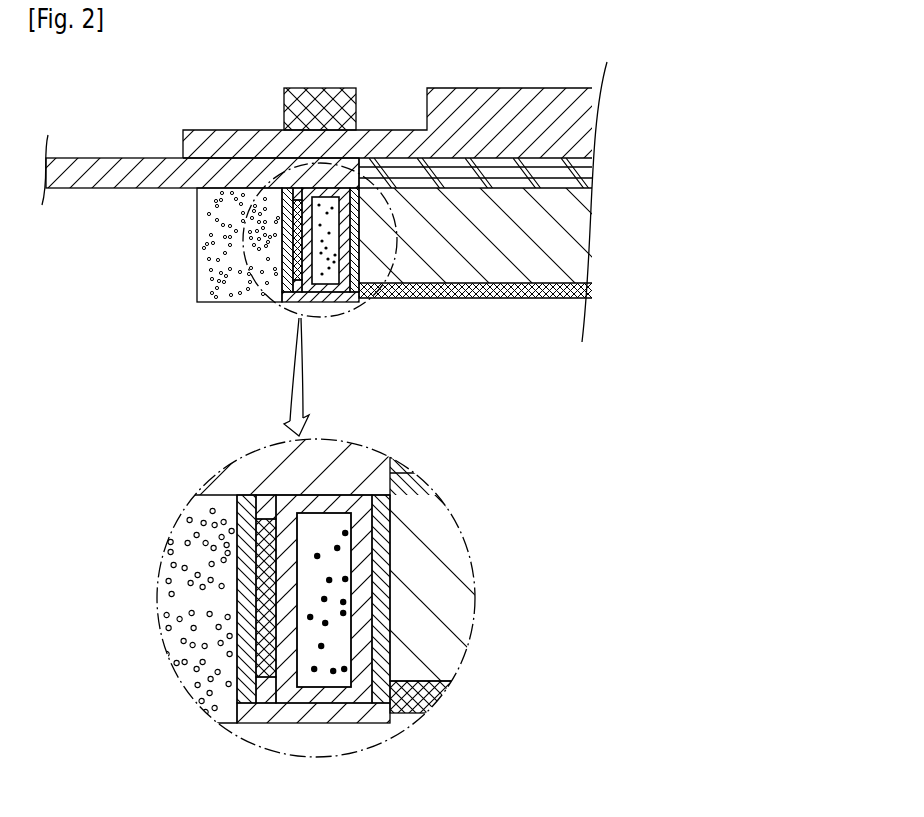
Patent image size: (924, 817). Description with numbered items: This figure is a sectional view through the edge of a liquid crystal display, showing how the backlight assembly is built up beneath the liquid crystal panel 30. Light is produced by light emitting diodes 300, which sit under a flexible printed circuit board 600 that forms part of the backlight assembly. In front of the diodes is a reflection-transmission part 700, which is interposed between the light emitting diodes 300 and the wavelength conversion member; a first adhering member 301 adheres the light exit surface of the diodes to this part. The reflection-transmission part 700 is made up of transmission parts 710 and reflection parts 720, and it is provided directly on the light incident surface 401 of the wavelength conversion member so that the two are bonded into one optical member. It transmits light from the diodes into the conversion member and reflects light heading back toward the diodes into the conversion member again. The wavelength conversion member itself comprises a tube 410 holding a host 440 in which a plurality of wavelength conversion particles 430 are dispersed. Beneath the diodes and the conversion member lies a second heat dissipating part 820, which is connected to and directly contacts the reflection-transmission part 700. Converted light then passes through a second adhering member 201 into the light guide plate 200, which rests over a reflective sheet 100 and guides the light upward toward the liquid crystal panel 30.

The liquid crystal panel 30 is at (501, 98).
The flexible printed circuit board 600 is at (121, 163).
The light emitting diodes 300 is at (198, 213).
The first adhering member 301 is at (246, 567).
The light incident surface 401 is at (280, 596).
The tube 410 is at (355, 697).
The wavelength conversion particles 430 is at (312, 240).
The host 440 is at (288, 688).
The reflection-transmission part 700 is at (114, 465).
The transmission parts 710 is at (240, 546).
The reflection parts 720 is at (250, 500).
The second heat dissipating part 820 is at (282, 297).
The reflective sheet 100 is at (513, 298).
The light guide plate 200 is at (477, 250).
The second adhering member 201 is at (380, 568).